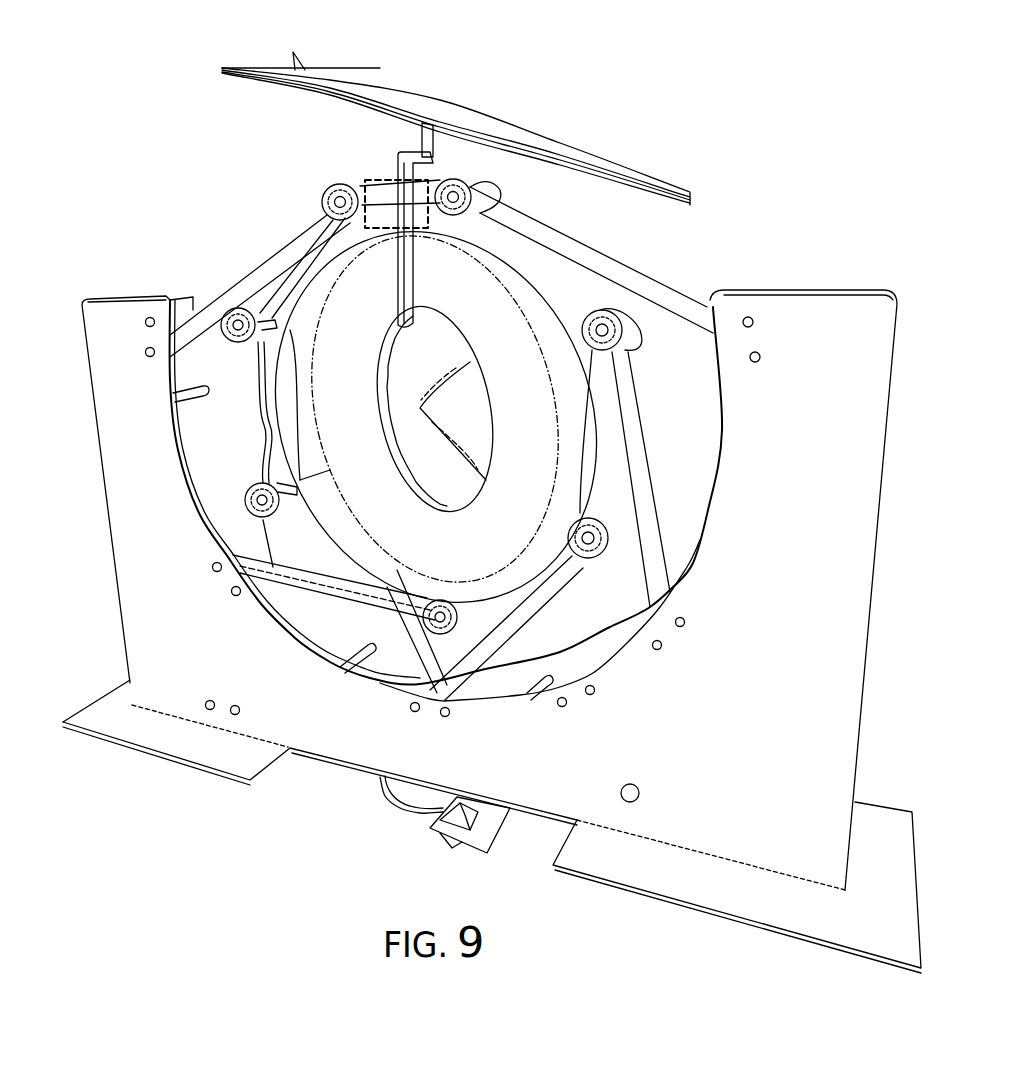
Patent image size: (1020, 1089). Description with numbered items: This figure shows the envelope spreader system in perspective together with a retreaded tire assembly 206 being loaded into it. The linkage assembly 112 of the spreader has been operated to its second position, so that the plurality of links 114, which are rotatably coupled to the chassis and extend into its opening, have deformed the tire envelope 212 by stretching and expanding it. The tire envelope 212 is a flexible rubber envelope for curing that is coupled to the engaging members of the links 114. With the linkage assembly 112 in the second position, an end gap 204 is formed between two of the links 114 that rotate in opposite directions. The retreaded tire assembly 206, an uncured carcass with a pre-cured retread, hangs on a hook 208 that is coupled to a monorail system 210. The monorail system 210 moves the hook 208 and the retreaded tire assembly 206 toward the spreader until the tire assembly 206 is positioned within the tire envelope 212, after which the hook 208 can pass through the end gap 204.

The linkage assembly 112 is at (256, 268).
The plurality of links 114 is at (216, 296).
The end gap 204 is at (418, 172).
The retreaded tire assembly 206 is at (323, 460).
The hook 208 is at (397, 170).
The monorail system 210 is at (372, 103).
The tire envelope 212 is at (563, 262).